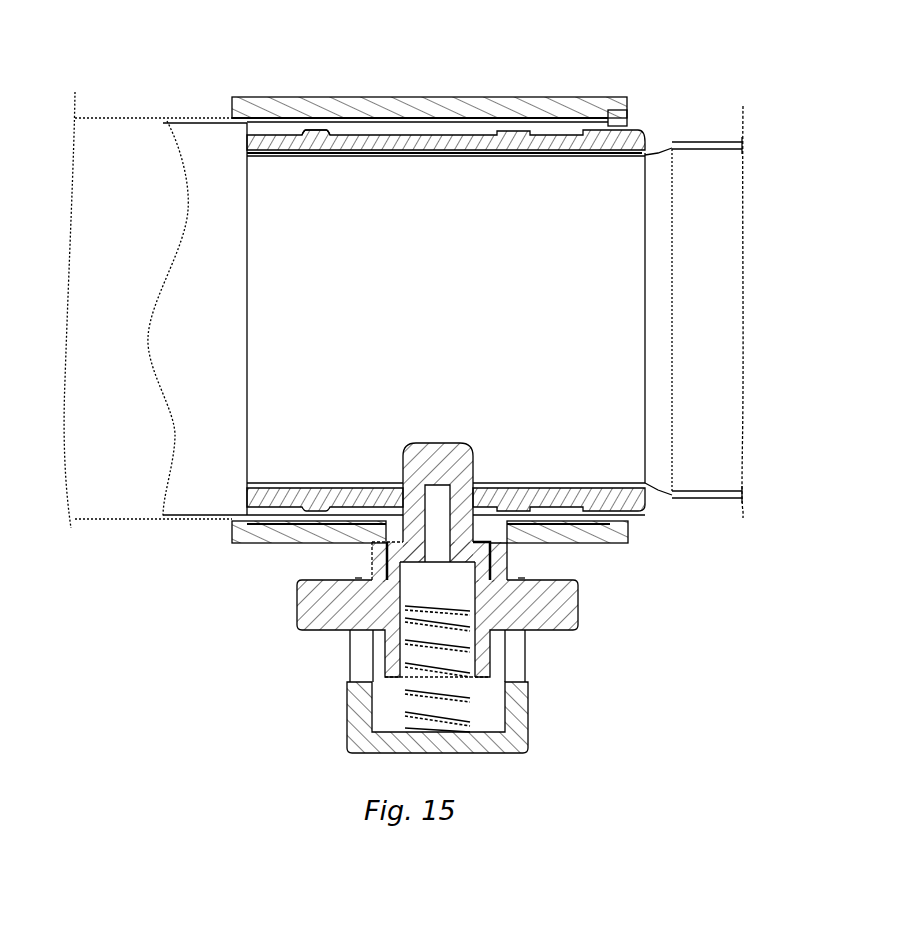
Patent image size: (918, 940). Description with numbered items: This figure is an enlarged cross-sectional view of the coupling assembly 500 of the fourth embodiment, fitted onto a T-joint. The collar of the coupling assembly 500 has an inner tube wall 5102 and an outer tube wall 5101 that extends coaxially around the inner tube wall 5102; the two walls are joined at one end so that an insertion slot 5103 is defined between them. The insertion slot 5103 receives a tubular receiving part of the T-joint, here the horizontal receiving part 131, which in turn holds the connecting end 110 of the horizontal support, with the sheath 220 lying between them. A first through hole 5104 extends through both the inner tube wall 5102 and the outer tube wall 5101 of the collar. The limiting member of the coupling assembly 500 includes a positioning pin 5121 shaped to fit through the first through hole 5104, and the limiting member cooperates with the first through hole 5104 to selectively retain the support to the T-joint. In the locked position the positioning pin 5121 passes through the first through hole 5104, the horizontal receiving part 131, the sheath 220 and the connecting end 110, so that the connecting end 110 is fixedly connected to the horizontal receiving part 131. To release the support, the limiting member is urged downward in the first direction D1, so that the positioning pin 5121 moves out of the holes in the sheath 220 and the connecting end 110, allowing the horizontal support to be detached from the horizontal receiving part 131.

The horizontal receiving part 131 is at (208, 118).
The coupling assembly 500 is at (325, 66).
The outer tube wall 5101 is at (432, 97).
The insertion slot 5103 is at (627, 113).
The inner tube wall 5102 is at (450, 130).
The sheath 220 is at (314, 132).
The connecting end 110 is at (552, 154).
The positioning pin 5121 is at (443, 464).
The first through hole 5104 is at (372, 523).
The first direction D1 is at (628, 604).